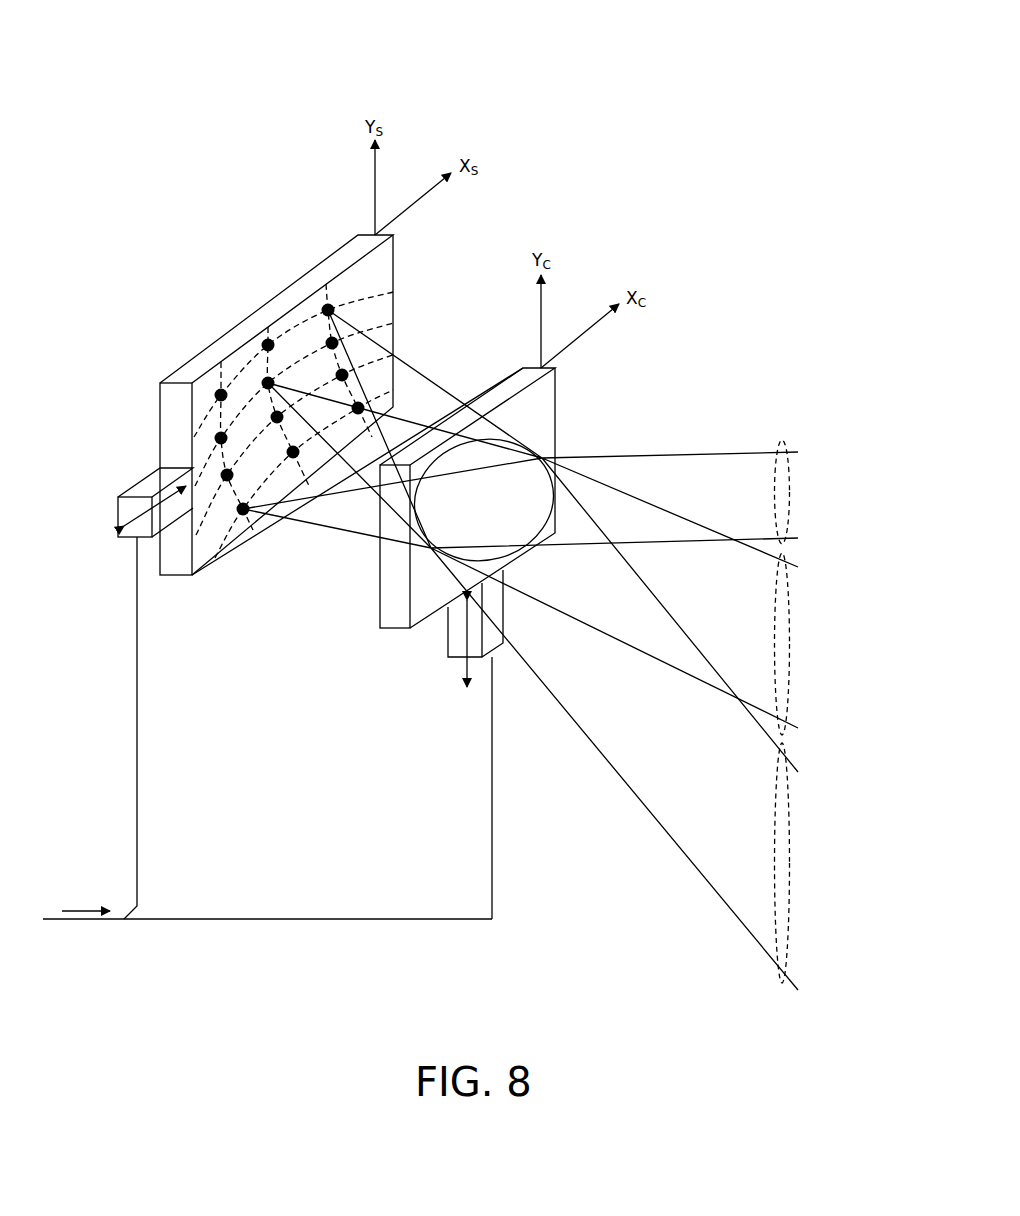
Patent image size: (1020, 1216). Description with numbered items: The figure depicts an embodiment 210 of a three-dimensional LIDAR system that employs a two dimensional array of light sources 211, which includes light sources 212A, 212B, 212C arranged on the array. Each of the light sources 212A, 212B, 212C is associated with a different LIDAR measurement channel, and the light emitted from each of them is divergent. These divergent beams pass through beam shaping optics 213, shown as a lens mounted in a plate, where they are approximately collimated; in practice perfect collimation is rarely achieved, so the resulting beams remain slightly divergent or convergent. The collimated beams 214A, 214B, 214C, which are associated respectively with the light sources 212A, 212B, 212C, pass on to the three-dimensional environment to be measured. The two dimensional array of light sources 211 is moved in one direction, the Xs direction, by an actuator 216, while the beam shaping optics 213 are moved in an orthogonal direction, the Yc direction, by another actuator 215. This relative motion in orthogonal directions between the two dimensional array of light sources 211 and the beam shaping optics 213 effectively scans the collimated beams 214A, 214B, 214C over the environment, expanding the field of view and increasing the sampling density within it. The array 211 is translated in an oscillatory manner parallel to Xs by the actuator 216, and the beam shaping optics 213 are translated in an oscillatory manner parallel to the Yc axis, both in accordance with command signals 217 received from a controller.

The 3-D LIDAR system embodiment 210 is at (145, 68).
The two dimensional array of light sources 211 is at (160, 425).
The light source 212A is at (268, 383).
The light source 212B is at (328, 310).
The light source 212C is at (243, 509).
The beam shaping optics 213 is at (555, 405).
The collimated beam 214A is at (790, 630).
The collimated beam 214B is at (790, 851).
The collimated beam 214C is at (790, 481).
The actuator 215 is at (448, 640).
The actuator 216 is at (118, 505).
The command signals 217 is at (86, 911).